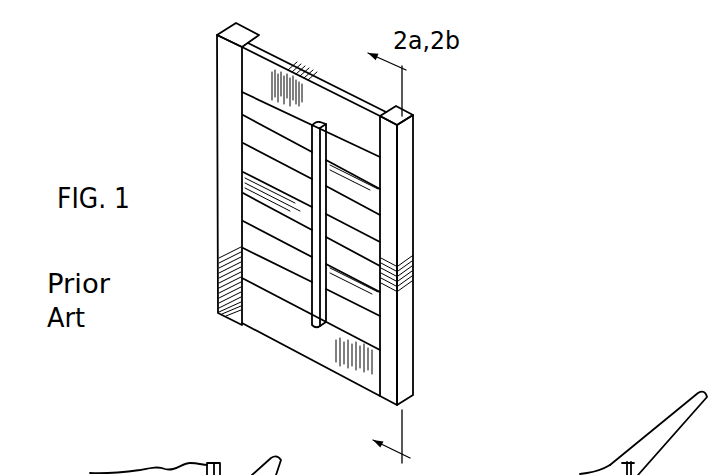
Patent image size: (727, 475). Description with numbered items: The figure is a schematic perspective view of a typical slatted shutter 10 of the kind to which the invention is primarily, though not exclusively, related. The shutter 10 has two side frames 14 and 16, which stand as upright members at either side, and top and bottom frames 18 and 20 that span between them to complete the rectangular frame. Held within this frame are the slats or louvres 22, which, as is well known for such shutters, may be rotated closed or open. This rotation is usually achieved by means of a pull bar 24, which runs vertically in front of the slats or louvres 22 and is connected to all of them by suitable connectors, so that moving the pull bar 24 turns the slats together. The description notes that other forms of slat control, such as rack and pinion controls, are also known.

The shutter 10 is at (432, 170).
The side frame 14 is at (230, 111).
The side frame 16 is at (405, 245).
The top frame 18 is at (325, 103).
The bottom frame 20 is at (283, 318).
The slats or louvres 22 is at (255, 267).
The pull bar 24 is at (320, 193).